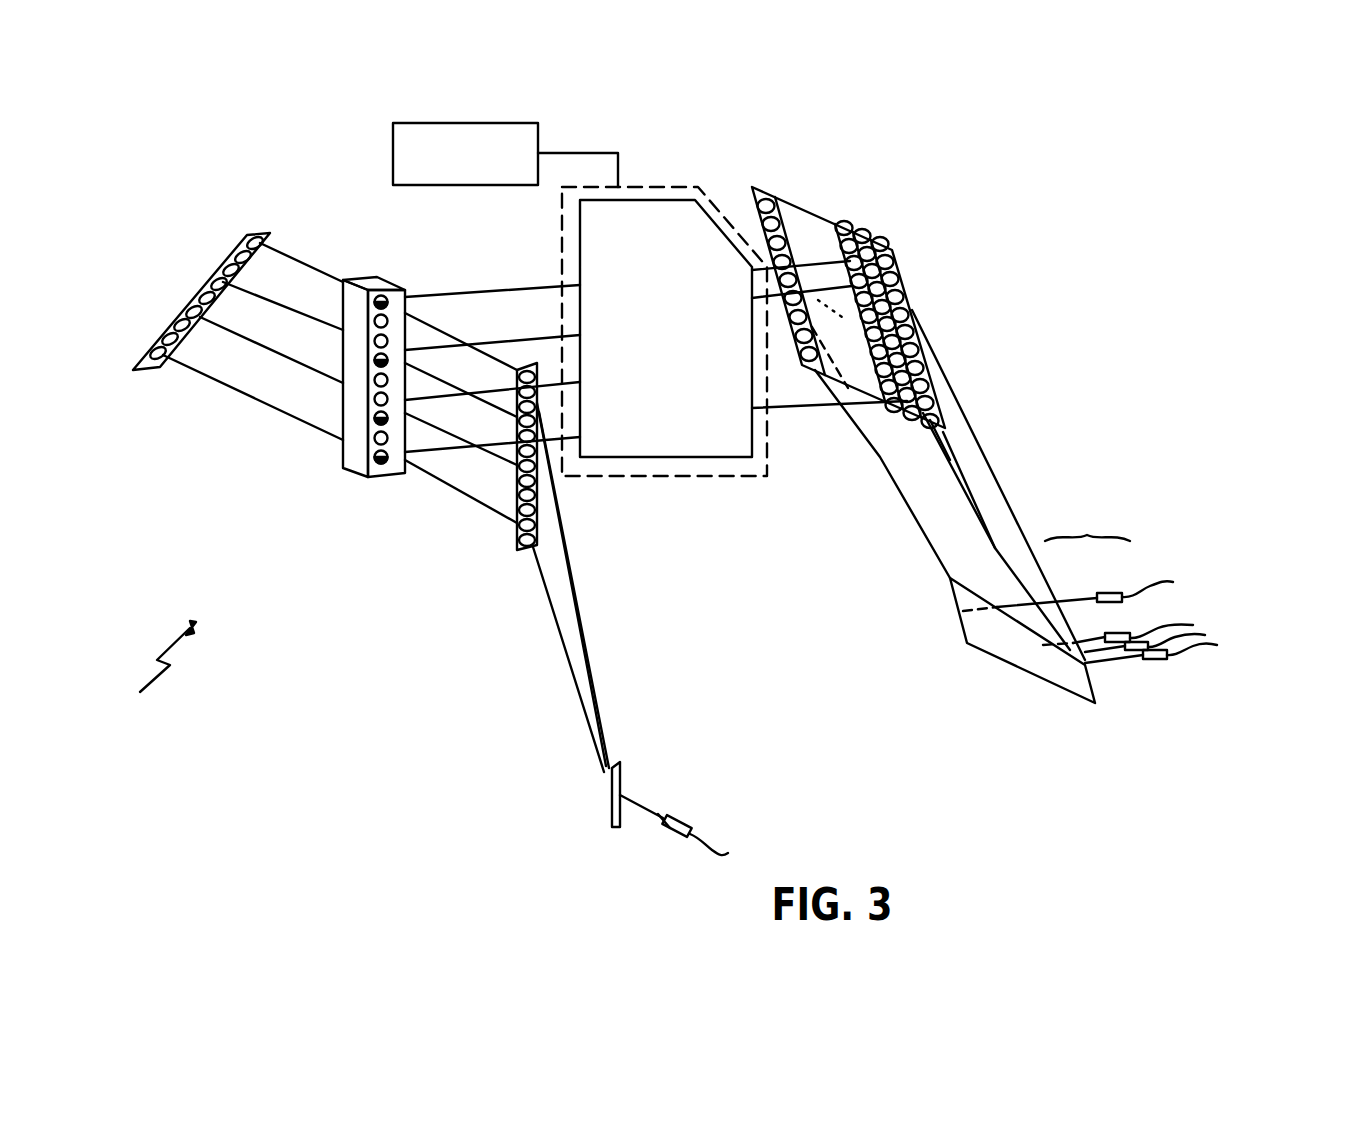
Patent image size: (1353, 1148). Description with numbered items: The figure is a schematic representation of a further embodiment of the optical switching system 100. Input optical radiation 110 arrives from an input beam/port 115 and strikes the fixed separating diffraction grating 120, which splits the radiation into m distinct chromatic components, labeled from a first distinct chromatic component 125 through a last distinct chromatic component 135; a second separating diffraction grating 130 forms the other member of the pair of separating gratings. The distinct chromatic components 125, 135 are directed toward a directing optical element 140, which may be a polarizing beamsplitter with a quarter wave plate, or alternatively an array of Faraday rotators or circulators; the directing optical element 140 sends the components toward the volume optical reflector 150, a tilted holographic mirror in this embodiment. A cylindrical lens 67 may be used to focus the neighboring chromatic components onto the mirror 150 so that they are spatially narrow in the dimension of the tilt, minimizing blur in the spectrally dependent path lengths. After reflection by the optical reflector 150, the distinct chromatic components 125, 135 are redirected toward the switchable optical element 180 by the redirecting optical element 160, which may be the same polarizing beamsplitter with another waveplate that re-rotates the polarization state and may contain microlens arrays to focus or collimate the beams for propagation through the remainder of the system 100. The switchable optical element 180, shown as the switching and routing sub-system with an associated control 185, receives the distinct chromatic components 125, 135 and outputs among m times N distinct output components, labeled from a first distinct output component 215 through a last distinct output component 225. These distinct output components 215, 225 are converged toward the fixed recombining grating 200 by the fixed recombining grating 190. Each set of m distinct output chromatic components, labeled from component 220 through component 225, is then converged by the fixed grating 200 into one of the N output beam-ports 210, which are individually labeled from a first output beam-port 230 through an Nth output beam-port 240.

The system 100 is at (154, 669).
The input optical radiation 110 is at (652, 810).
The input beam/port 115 is at (678, 820).
The separating diffraction grating 120 is at (612, 797).
The distinct chromatic component 125 is at (557, 623).
The separating diffraction grating 130 is at (517, 525).
The distinct chromatic component 135 is at (572, 572).
The directing optical element 140 is at (343, 278).
The volume optical reflector 150 is at (157, 340).
The redirecting optical element 160 is at (386, 260).
The cylindrical lens 67 is at (664, 822).
The switchable optical element 180 is at (653, 185).
The control 185 is at (437, 123).
The recombining diffraction grating 190 is at (917, 322).
The recombining diffraction grating 200 is at (1003, 663).
The output beam-ports 210 is at (1090, 550).
The distinct output component 215 is at (987, 460).
The distinct output chromatic component 220 is at (975, 505).
The distinct output chromatic component 225 is at (912, 515).
The output beam-port 230 is at (1152, 662).
The output beam-port 240 is at (1120, 592).